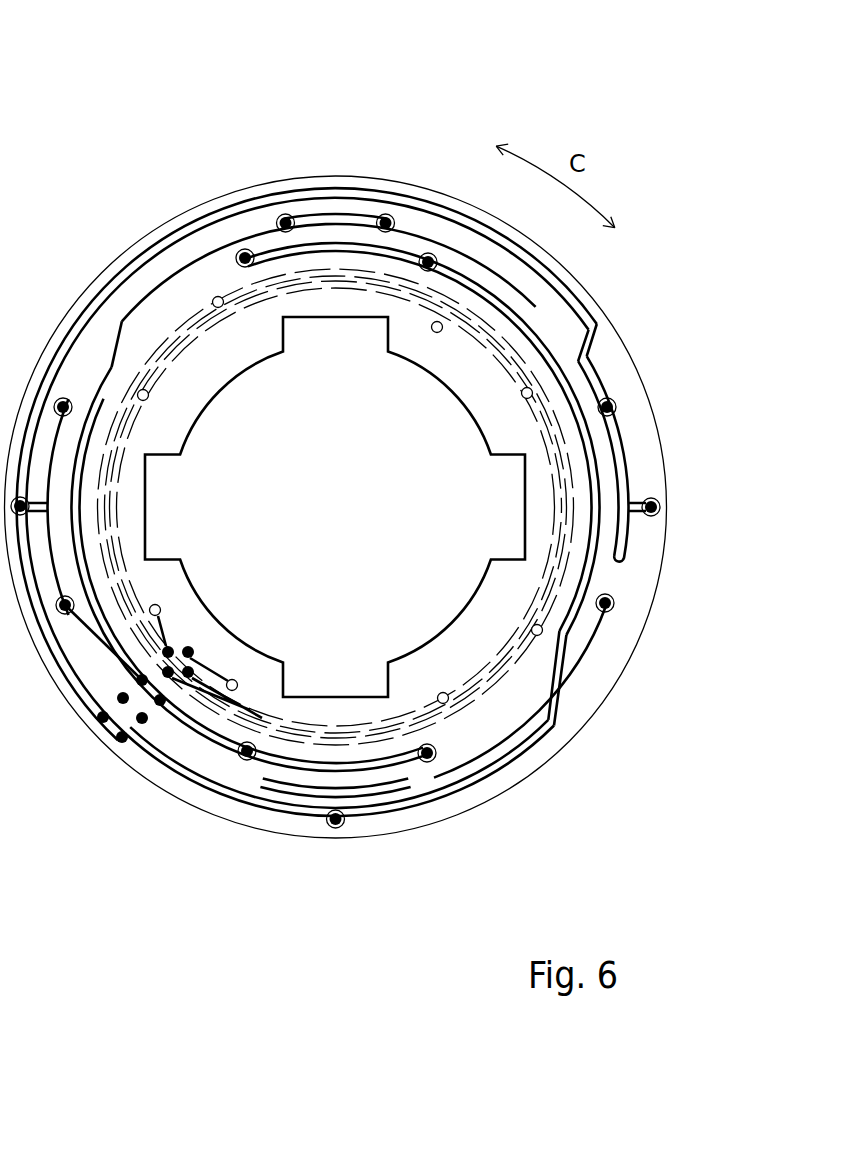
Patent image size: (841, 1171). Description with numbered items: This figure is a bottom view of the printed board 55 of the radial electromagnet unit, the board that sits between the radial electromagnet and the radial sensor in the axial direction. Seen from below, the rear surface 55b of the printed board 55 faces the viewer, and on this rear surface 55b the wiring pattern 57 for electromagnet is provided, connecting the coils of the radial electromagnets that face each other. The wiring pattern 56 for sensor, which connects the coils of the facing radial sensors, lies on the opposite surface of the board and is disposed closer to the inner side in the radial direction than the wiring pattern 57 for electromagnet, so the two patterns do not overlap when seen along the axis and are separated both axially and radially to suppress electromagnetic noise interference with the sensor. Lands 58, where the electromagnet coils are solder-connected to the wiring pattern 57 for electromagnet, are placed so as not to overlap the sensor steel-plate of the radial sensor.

The printed board 55 is at (118, 76).
The rear surface 55b is at (611, 364).
The wiring pattern for sensor 56 is at (567, 452).
The wiring pattern for electromagnet 57 is at (252, 205).
The land 58 is at (288, 213).